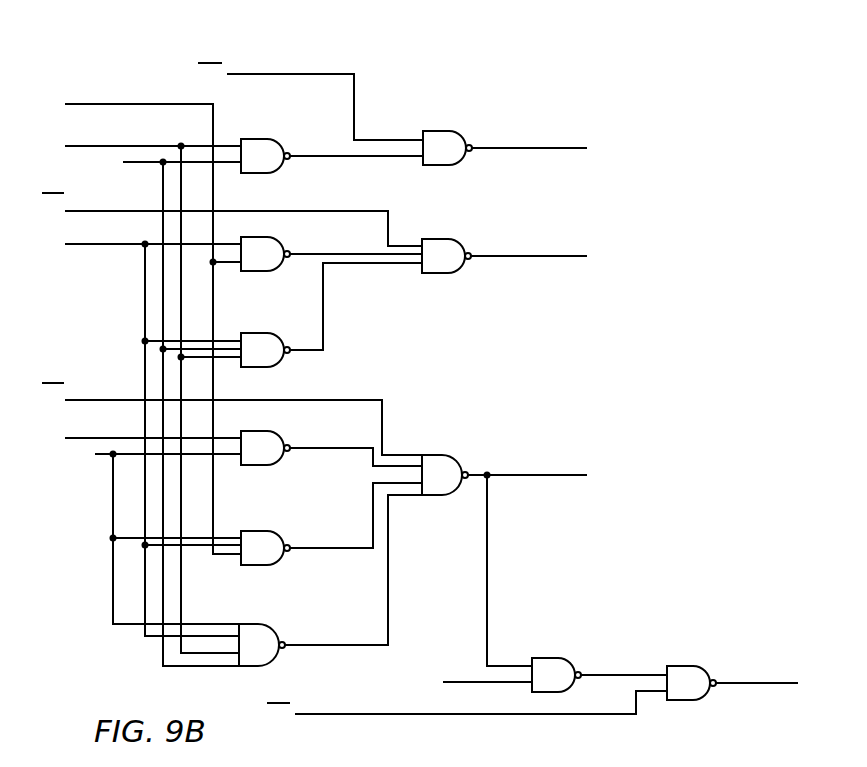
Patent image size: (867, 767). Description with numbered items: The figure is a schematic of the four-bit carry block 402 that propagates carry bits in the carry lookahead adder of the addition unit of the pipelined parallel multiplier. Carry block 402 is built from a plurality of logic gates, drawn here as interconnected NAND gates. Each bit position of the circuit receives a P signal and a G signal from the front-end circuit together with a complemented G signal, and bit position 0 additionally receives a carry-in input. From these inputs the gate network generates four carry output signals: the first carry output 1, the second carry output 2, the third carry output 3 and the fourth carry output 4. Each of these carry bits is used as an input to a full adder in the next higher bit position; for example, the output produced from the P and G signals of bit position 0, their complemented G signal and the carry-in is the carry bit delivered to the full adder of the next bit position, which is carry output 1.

The carry block 402 is at (114, 46).
The bit position 0 carry-in input C0 0 is at (165, 409).
The carry output C1 1 is at (544, 157).
The carry output C2 2 is at (544, 265).
The carry output C3 3 is at (542, 487).
The carry output C4 4 is at (771, 694).